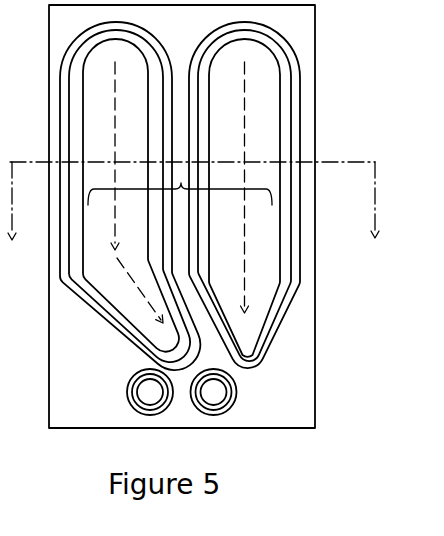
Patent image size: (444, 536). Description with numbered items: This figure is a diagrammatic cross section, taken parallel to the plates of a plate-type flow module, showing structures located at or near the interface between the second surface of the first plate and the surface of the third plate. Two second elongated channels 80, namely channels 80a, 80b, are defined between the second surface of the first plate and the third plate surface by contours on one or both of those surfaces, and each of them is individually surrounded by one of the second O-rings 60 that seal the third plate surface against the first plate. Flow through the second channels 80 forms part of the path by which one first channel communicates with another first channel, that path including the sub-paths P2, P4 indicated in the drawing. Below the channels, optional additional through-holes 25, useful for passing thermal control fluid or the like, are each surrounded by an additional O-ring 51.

The second O-ring 60 is at (65, 84).
The second elongated channel 80 is at (181, 183).
The second elongated channel 80a is at (133, 216).
The second elongated channel 80b is at (263, 216).
The additional through-hole 25 is at (146, 391).
The additional O-ring 51 is at (198, 407).
The sub-path P2 is at (115, 97).
The sub-path P4 is at (245, 110).